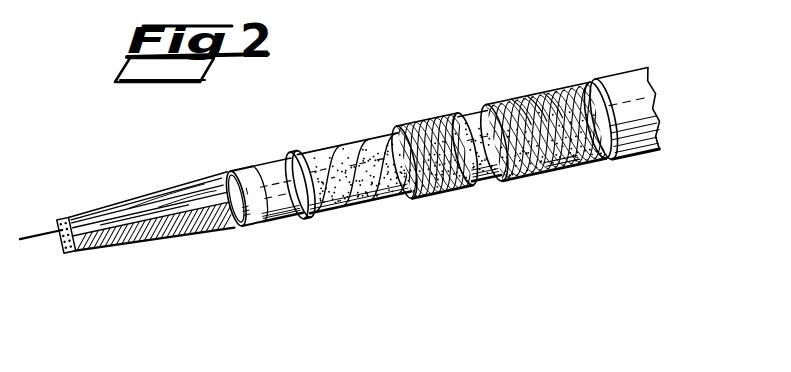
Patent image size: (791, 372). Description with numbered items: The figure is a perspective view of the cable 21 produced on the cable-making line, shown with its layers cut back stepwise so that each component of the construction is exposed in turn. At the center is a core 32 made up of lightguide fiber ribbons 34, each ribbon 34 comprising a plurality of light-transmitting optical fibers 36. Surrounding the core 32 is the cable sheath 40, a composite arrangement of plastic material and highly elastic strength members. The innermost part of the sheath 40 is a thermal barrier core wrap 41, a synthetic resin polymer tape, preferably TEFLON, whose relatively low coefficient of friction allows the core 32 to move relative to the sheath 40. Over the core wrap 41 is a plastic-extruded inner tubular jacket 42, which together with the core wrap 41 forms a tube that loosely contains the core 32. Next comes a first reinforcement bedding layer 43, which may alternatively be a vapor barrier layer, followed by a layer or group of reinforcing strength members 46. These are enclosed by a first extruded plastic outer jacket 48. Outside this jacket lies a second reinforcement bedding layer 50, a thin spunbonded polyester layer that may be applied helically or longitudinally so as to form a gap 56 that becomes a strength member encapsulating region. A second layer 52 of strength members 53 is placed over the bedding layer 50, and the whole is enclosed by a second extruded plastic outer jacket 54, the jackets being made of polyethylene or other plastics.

The cable 21 is at (447, 292).
The core 32 is at (120, 240).
The lightguide fiber ribbons 34 is at (110, 212).
The optical fibers 36 is at (45, 218).
The cable sheath 40 is at (619, 178).
The thermal barrier core wrap 41 is at (269, 224).
The inner tubular jacket 42 is at (342, 208).
The first reinforcement bedding layer 43 is at (375, 201).
The reinforcing strength members 46 is at (421, 200).
The first extruded plastic outer jacket 48 is at (475, 194).
The second reinforcement bedding layer 50 is at (545, 139).
The second layer of strength members 52 is at (493, 104).
The strength members 53 is at (528, 102).
The second extruded plastic outer jacket 54 is at (607, 83).
The gap 56 is at (550, 172).